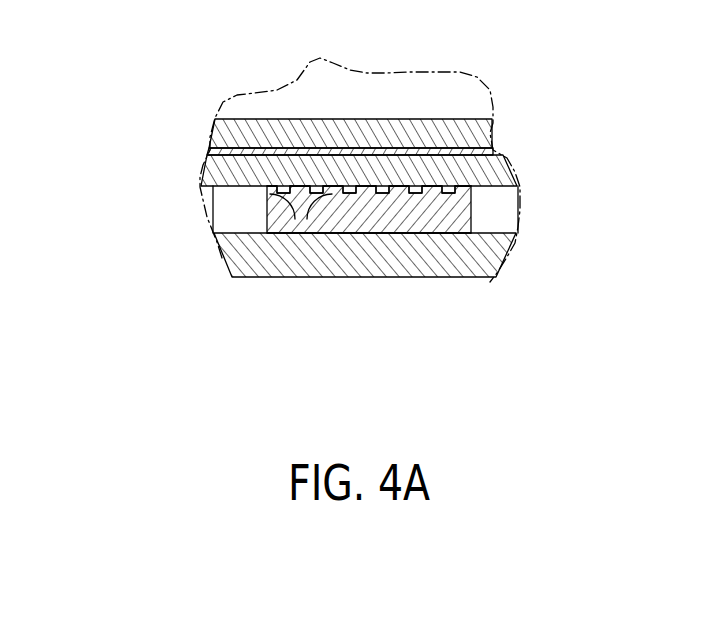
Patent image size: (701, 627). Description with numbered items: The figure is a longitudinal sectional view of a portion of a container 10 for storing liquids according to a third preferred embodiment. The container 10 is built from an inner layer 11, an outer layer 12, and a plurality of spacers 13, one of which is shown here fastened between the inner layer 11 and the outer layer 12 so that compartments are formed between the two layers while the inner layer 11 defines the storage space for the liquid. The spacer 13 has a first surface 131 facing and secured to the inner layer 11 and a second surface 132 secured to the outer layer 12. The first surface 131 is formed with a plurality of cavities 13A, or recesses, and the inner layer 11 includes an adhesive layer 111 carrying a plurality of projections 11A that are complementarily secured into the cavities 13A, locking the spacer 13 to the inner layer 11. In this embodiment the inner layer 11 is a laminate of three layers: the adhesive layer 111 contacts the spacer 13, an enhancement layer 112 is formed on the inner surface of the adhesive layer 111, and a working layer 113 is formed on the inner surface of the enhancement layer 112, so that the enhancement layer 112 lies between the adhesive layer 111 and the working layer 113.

The container 10 is at (372, 300).
The inner layer 11 is at (90, 50).
The adhesive layer 111 is at (222, 174).
The enhancement layer 112 is at (225, 152).
The working layer 113 is at (237, 133).
The projections 11A is at (267, 213).
The outer layer 12 is at (285, 262).
The spacers 13 is at (472, 215).
The cavities 13A is at (365, 192).
The first surface 131 is at (470, 187).
The second surface 132 is at (427, 234).